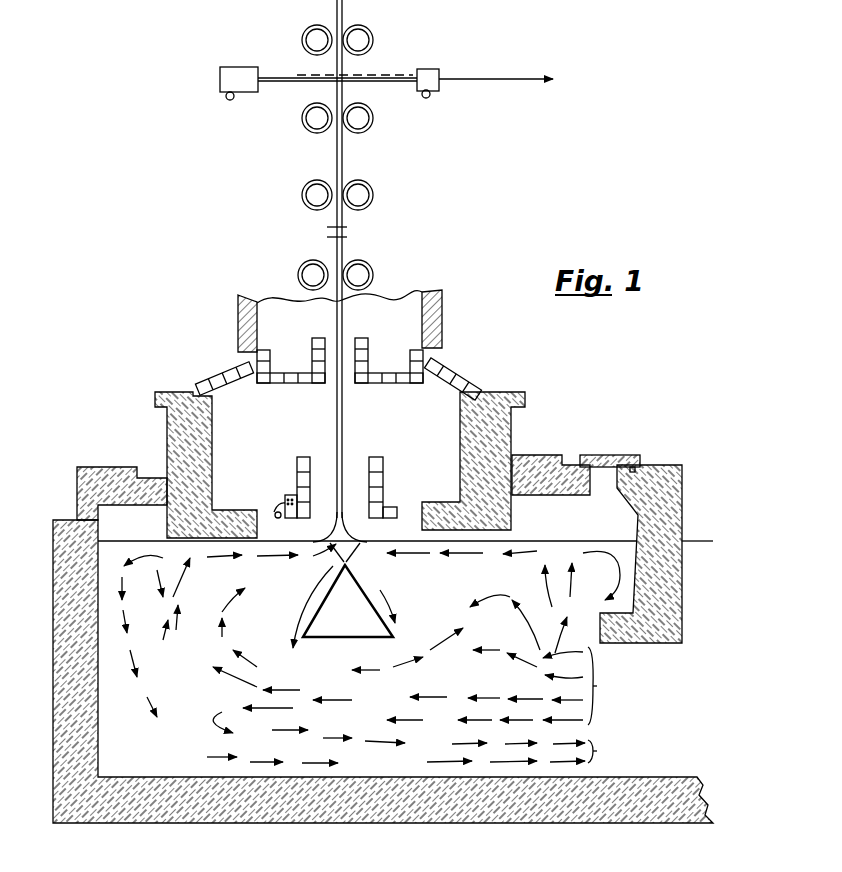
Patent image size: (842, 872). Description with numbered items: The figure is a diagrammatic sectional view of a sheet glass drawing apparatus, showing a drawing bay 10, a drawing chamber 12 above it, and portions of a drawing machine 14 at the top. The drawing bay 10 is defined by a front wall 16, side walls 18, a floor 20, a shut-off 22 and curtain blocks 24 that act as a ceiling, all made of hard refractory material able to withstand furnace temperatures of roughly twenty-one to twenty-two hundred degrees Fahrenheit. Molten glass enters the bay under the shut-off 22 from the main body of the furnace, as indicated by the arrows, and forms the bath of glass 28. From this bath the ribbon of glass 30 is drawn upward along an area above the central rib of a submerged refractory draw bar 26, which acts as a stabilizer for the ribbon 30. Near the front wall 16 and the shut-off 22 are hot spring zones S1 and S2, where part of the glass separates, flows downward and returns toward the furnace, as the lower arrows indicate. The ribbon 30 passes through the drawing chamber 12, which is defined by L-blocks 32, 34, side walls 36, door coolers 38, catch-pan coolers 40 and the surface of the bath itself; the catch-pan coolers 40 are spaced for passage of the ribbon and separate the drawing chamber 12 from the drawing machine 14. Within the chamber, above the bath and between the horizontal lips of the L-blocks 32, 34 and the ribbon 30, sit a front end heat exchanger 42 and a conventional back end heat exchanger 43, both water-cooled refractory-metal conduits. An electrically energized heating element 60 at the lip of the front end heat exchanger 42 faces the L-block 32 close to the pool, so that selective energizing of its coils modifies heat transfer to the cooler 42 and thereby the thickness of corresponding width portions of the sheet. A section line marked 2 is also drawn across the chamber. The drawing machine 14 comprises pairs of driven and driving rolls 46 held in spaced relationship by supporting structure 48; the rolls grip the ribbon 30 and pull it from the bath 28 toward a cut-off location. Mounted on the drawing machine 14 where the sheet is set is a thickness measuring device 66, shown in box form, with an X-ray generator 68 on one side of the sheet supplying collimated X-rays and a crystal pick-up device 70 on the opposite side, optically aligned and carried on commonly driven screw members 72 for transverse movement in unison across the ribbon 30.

The section line 2- 2 is at (382, 428).
The drawing bay 10 is at (127, 457).
The drawing chamber 12 is at (443, 403).
The drawing machine 14 is at (356, 232).
The front wall 16 is at (53, 700).
The side walls 18 is at (310, 692).
The floor 20 is at (133, 778).
The shut-off 22 is at (682, 507).
The curtain blocks 24 is at (90, 467).
The draw bar 26 is at (355, 622).
The bath of glass 28 is at (582, 541).
The ribbon of glass 30 is at (344, 408).
The L-block 32 is at (213, 498).
The L-block 34 is at (463, 460).
The side walls 36 is at (262, 444).
The door coolers 38 is at (222, 382).
The catch-pan coolers 40 is at (359, 384).
The front end heat exchanger 42 is at (297, 463).
The back end heat exchanger 43 is at (384, 462).
The driven and driving rolls 46 is at (364, 110).
The supporting structure 48 is at (442, 308).
The heating element 60 is at (279, 518).
The thickness measuring device 66 is at (237, 62).
The X-ray generator 68 is at (220, 79).
The crystal pick-up device 70 is at (436, 69).
The screw members 72 is at (227, 100).
The hot spring zone S1 is at (163, 552).
The hot spring zone S2 is at (558, 563).